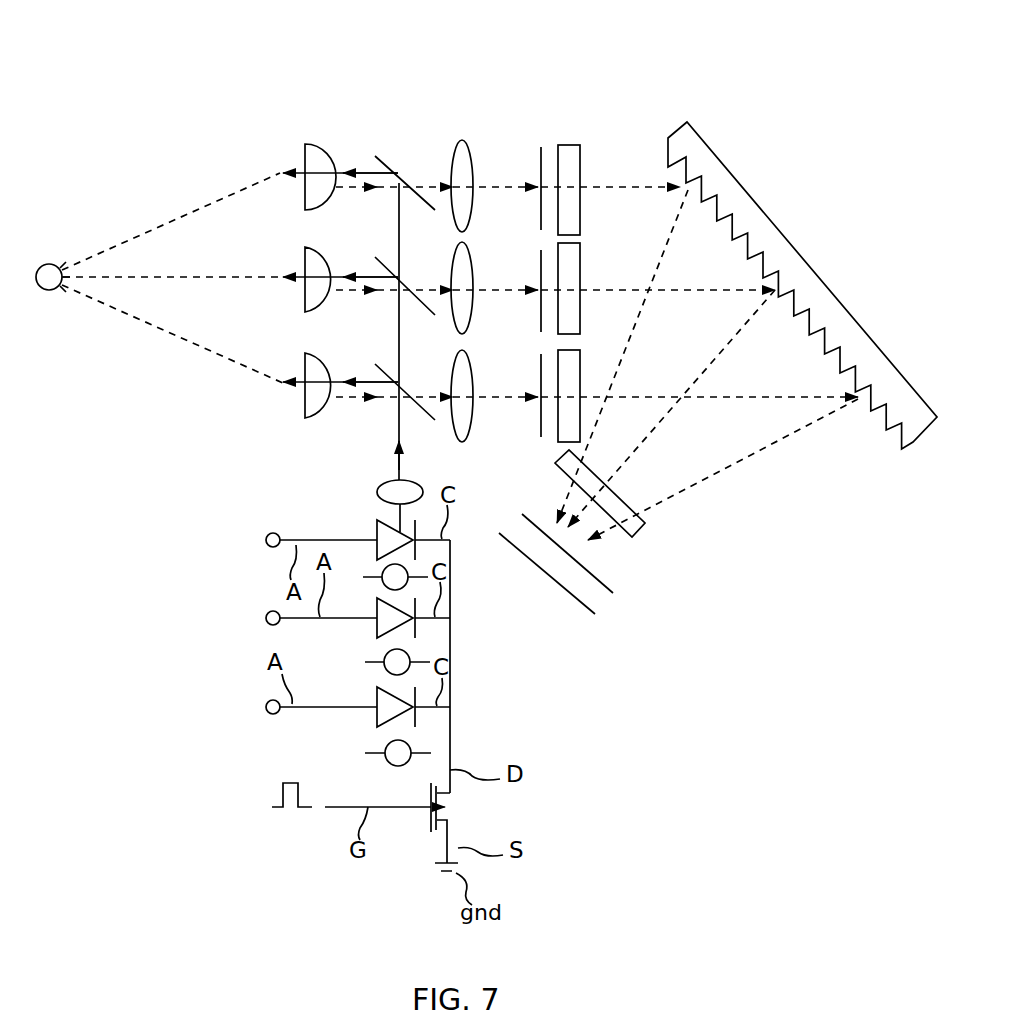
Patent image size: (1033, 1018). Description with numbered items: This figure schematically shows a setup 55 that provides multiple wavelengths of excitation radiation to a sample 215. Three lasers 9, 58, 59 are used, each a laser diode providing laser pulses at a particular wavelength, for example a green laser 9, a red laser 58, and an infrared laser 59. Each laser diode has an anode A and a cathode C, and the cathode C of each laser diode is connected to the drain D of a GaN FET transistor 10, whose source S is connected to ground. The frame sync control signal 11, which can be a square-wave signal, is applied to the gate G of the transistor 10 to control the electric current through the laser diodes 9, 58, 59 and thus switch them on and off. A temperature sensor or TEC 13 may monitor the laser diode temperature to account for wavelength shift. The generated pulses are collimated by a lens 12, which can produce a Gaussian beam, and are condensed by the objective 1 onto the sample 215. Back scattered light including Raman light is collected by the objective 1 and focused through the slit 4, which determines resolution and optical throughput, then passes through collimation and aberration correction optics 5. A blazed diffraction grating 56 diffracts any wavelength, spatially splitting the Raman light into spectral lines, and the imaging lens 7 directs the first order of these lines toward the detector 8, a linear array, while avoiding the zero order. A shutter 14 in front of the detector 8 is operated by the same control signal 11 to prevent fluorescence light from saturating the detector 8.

The setup 55 is at (100, 55).
The blazed diffraction grating 56 is at (231, 123).
The sample 215 is at (50, 264).
The objective 1 is at (302, 373).
The slit 4 is at (540, 162).
The collimation and aberration correction optics 5 is at (570, 145).
The imaging lens 7 is at (615, 490).
The shutter 14 is at (612, 581).
The detector 8 is at (580, 618).
The lens 12 is at (417, 490).
The laser 9 is at (368, 539).
The temperature sensor or TEC 13 is at (380, 582).
The laser 58 is at (347, 620).
The laser 59 is at (372, 712).
The GaN FET transistor 10 is at (448, 820).
The frame sync signal 11 is at (272, 807).